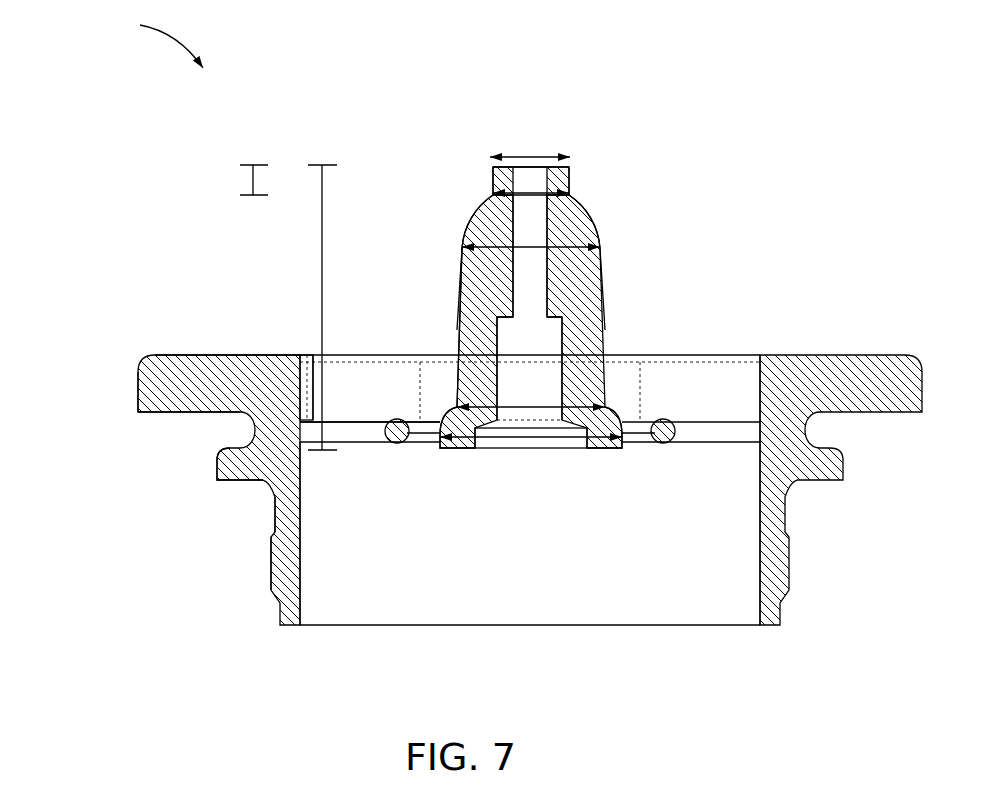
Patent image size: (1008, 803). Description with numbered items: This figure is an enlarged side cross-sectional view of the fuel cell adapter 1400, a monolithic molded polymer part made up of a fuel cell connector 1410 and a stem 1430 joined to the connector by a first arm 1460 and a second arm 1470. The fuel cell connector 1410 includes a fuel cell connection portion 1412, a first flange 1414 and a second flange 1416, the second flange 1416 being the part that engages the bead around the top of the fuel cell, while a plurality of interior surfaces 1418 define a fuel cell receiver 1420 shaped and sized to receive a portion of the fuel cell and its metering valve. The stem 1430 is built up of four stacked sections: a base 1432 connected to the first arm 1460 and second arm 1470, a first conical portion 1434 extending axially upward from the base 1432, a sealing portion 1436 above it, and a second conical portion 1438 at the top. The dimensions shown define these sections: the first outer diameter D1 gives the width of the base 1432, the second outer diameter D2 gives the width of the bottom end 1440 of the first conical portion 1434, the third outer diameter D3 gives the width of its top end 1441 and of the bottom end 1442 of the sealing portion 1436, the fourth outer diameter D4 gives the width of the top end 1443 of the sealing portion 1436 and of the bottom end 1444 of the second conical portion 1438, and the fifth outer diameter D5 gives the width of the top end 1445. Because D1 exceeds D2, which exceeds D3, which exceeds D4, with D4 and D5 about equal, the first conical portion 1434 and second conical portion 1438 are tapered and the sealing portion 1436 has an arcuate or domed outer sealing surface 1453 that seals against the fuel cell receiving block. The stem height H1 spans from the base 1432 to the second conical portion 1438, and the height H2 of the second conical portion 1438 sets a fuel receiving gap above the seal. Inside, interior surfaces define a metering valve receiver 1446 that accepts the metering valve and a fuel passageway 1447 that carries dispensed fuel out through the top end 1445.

The fuel cell adapter 1400 is at (141, 38).
The fuel cell connector 1410 is at (788, 572).
The fuel cell connection portion 1412 is at (273, 517).
The first flange 1414 is at (140, 378).
The second flange 1416 is at (217, 468).
The interior surfaces 1418 is at (760, 355).
The fuel cell receiver 1420 is at (559, 577).
The stem 1430 is at (606, 340).
The base 1432 is at (591, 450).
The first conical portion 1434 is at (458, 340).
The sealing portion 1436 is at (467, 232).
The second conical portion 1438 is at (493, 170).
The bottom end of the first conical portion 1440 is at (452, 407).
The top end of the first conical portion 1441 is at (462, 248).
The bottom end of the sealing portion 1442 is at (600, 257).
The top end of the sealing portion 1443 is at (493, 193).
The bottom end of the second conical portion 1444 is at (567, 196).
The top end of the second conical portion 1445 is at (570, 168).
The metering valve receiver 1446 is at (559, 378).
The fuel passageway 1447 is at (527, 267).
The outer sealing surface 1453 is at (593, 226).
The first arm 1460 is at (663, 444).
The second arm 1470 is at (397, 444).
The first outer diameter D1 is at (471, 450).
The second outer diameter D2 is at (608, 407).
The third outer diameter D3 is at (588, 247).
The fourth outer diameter D4 is at (570, 193).
The fifth outer diameter D5 is at (530, 155).
The height of the stem H1 is at (322, 270).
The height of the second conical portion H2 is at (252, 180).